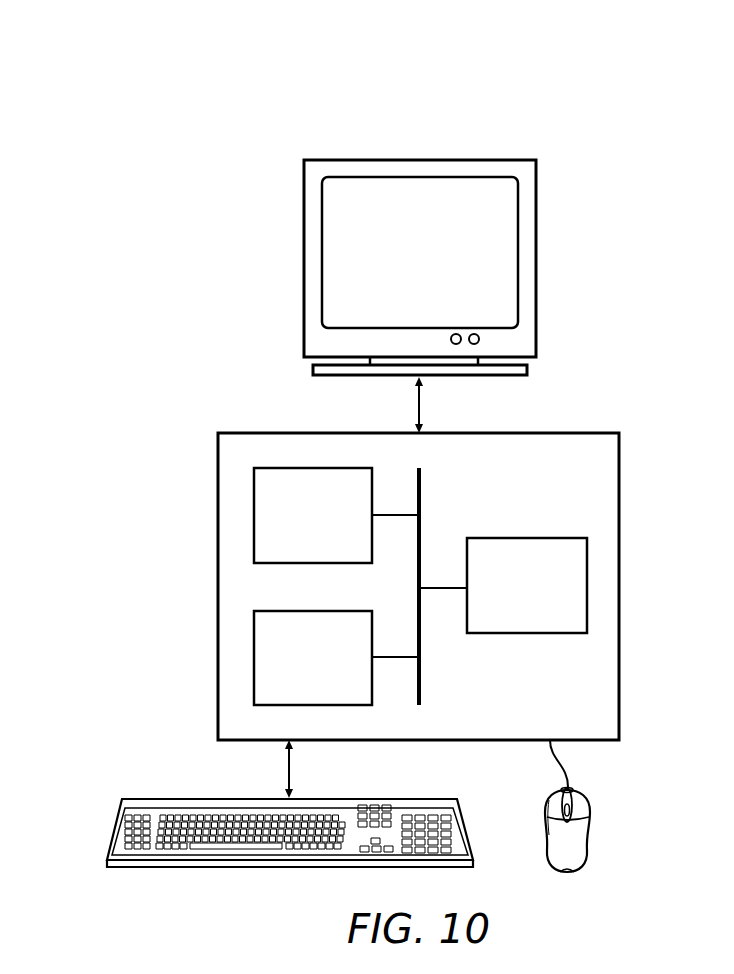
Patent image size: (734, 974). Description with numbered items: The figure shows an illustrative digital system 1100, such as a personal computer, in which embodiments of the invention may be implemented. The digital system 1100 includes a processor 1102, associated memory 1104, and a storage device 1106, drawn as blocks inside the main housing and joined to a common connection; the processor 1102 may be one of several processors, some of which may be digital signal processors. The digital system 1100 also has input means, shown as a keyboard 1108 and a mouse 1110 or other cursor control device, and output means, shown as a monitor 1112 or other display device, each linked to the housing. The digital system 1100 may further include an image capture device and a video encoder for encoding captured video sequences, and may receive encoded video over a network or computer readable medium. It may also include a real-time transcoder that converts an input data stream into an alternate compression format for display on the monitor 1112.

The digital system 1100 is at (566, 73).
The processor 1102 is at (554, 600).
The memory 1104 is at (342, 529).
The storage device 1106 is at (342, 672).
The keyboard 1108 is at (115, 827).
The mouse 1110 is at (592, 835).
The monitor 1112 is at (403, 160).